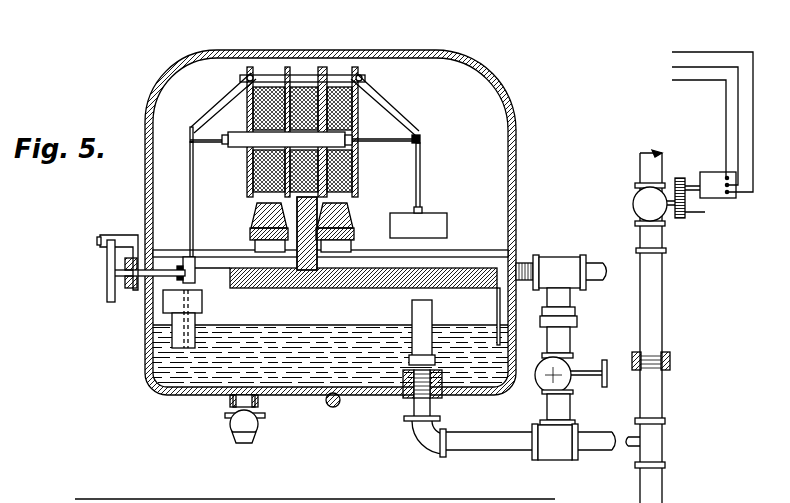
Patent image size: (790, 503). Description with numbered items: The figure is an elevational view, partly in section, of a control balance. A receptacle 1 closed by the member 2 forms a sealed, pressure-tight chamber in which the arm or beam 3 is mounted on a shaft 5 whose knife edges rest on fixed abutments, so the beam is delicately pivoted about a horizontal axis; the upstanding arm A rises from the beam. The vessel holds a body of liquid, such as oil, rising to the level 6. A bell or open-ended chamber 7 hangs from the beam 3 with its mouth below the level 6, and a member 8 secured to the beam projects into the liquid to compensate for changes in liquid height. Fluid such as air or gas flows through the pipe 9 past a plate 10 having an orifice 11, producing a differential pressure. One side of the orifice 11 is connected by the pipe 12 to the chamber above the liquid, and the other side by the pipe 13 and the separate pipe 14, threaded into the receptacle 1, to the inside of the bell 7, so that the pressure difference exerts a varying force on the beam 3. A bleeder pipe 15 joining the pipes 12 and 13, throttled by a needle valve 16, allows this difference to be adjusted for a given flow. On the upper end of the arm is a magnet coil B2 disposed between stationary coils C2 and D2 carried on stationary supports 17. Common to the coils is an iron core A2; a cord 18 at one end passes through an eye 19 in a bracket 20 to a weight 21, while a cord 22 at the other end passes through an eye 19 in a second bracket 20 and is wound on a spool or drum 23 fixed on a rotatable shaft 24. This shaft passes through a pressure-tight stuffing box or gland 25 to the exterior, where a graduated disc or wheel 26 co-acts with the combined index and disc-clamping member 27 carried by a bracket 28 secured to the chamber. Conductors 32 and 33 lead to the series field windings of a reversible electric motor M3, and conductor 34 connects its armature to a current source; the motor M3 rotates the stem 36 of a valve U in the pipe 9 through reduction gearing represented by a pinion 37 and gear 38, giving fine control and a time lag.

The receptacle 1 is at (145, 355).
The member 2 is at (513, 108).
The arm or beam 3 is at (452, 276).
The shaft 5 is at (350, 212).
The liquid level 6 is at (370, 326).
The bell or open-ended chamber 7 is at (342, 322).
The member 8 is at (183, 328).
The pipe 9 is at (656, 502).
The plate 10 is at (663, 350).
The orifice 11 is at (670, 372).
The pipe 12 is at (590, 272).
The pipe 13 is at (432, 416).
The pipe 14 is at (433, 315).
The bleeder pipe 15 is at (560, 342).
The needle valve 16 is at (573, 386).
The stationary supports 17 is at (252, 212).
The cord 18 is at (190, 195).
The eye 19 is at (190, 137).
The bracket 20 is at (224, 92).
The weight 21 is at (437, 223).
The cord 22 is at (211, 144).
The spool or drum 23 is at (195, 265).
The rotatable shaft 24 is at (165, 266).
The stuffing box or gland 25 is at (132, 292).
The disc or wheel 26 is at (106, 298).
The combined index or pointer and disc-clamping member 27 is at (103, 247).
The bracket 28 is at (127, 234).
The conductor 32 is at (670, 80).
The conductor 33 is at (672, 52).
The conductor 34 is at (700, 67).
The valve stem 36 is at (668, 212).
The pinion 37 is at (687, 168).
The gear 38 is at (686, 213).
The central post A is at (356, 197).
The core A2 is at (251, 150).
The magnet coil B2 is at (302, 83).
The stationary coil C2 is at (250, 128).
The stationary coil D2 is at (352, 168).
The reversible electric motor M3 is at (712, 172).
The valve U is at (642, 200).